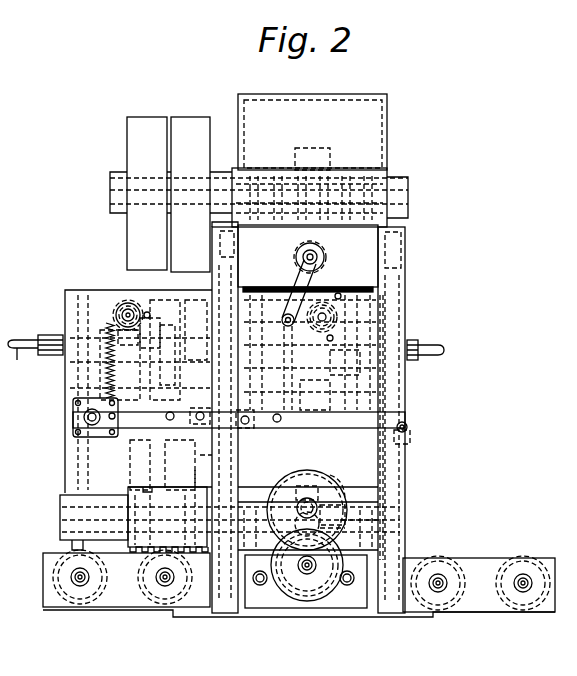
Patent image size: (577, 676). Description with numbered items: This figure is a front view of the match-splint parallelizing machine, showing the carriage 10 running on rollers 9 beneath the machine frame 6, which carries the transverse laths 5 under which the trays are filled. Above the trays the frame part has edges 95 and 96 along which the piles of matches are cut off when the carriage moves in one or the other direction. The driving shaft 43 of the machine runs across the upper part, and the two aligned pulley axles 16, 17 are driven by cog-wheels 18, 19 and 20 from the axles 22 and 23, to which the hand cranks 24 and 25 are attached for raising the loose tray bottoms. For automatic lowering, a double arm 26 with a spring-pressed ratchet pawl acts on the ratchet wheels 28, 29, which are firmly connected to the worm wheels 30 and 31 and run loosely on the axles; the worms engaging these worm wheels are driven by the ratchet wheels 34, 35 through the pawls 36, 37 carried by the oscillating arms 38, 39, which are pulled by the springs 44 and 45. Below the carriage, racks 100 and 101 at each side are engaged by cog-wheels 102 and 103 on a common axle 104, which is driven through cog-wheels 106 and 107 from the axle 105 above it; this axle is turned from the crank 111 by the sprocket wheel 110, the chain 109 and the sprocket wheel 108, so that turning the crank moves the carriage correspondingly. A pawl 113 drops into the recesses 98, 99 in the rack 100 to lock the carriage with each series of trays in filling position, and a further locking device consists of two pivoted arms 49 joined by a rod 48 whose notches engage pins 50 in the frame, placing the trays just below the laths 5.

The transverse laths 5 is at (308, 420).
The machine frame 6 is at (403, 498).
The rollers 9 is at (58, 565).
The carriage 10 is at (65, 452).
The axle or shaft 16 is at (77, 388).
The axle or shaft 17 is at (405, 428).
The cog-wheel 18 is at (164, 403).
The cog-wheel 19 is at (170, 335).
The cog-wheel 20 is at (312, 395).
The axle 22 is at (90, 338).
The axle 23 is at (360, 355).
The crank 24 is at (17, 360).
The crank 25 is at (444, 348).
The double arm 26 is at (157, 322).
The ratchet wheel 28 is at (143, 365).
The ratchet wheel 29 is at (398, 398).
The worm wheel 30 is at (127, 335).
The worm wheel 31 is at (341, 325).
The ratchet wheel 34 is at (118, 307).
The ratchet wheel 35 is at (338, 293).
The pawl 36 is at (143, 300).
The pawl 37 is at (300, 290).
The arm 38 is at (148, 315).
The arm 39 is at (334, 322).
The driving shaft 43 is at (110, 195).
The spring 44 is at (95, 505).
The spring 45 is at (333, 338).
The rod 48 is at (405, 433).
The arms 49 is at (330, 420).
The pins 50 is at (212, 455).
The edge 95 is at (386, 292).
The edge 96 is at (238, 283).
The recess 98 is at (147, 487).
The recess 99 is at (298, 490).
The rack 100 is at (151, 597).
The rack 101 is at (135, 548).
The cog-wheel 102 is at (312, 595).
The cog-wheel 103 is at (299, 573).
The axle 104 is at (313, 570).
The axle 105 is at (376, 522).
The cog-wheel 106 is at (345, 515).
The cog-wheel 107 is at (325, 527).
The sprocket wheel 108 is at (345, 483).
The chain 109 is at (284, 326).
The sprocket wheel 110 is at (296, 250).
The crank 111 is at (282, 320).
The pawl 113 is at (305, 471).